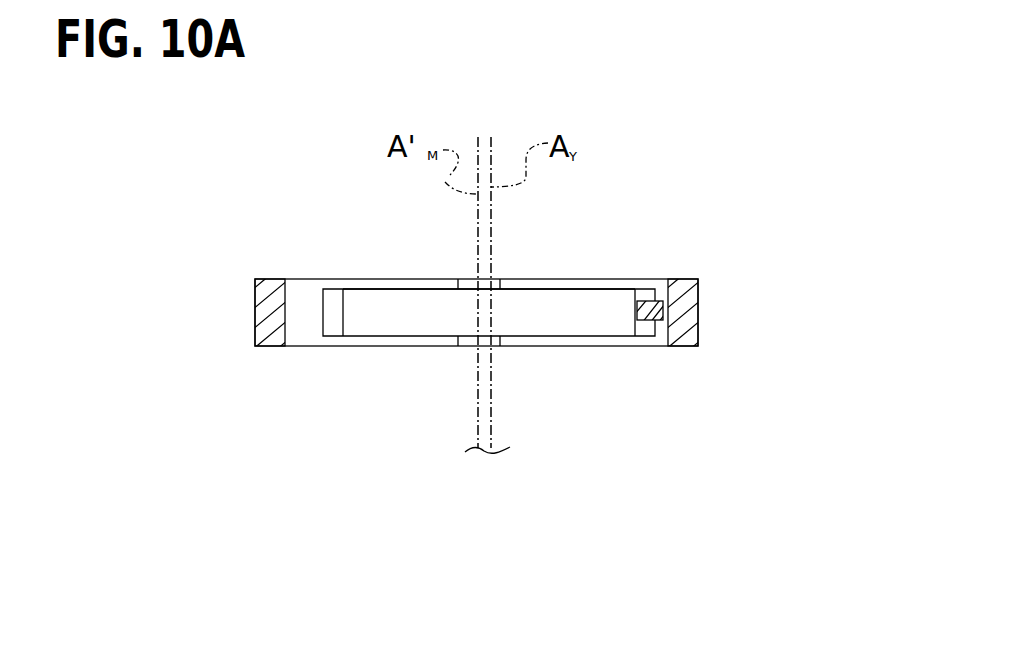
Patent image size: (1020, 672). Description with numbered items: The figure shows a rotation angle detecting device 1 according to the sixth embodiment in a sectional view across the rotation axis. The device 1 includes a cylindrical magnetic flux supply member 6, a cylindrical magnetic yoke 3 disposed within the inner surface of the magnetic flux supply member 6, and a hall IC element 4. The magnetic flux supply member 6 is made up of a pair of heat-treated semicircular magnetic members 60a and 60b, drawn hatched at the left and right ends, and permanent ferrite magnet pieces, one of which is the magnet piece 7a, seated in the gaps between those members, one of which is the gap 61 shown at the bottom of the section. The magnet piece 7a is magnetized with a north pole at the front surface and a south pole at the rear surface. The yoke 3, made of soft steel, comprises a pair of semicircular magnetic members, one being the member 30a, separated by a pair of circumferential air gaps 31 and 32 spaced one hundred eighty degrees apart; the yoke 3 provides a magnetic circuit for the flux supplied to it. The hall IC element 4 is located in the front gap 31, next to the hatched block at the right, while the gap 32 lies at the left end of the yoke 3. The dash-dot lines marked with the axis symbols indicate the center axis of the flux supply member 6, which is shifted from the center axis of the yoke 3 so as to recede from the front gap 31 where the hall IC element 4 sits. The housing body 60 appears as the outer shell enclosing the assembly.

The rotation angle detecting device 1 is at (633, 160).
The cylindrical magnetic yoke 3 is at (396, 300).
The hall IC element 4 is at (638, 310).
The cylindrical magnetic flux supply member 6 is at (310, 247).
The permanent ferrite magnet piece 7a is at (467, 289).
The semicircular magnetic member 30a is at (527, 297).
The front circumferential gap 31 is at (645, 328).
The circumferential gap 32 is at (335, 318).
The housing body 60 is at (365, 348).
The heat-treated semicircular magnetic member 60a is at (268, 279).
The heat-treated semicircular magnetic member 60b is at (680, 293).
The gap 61 is at (468, 347).